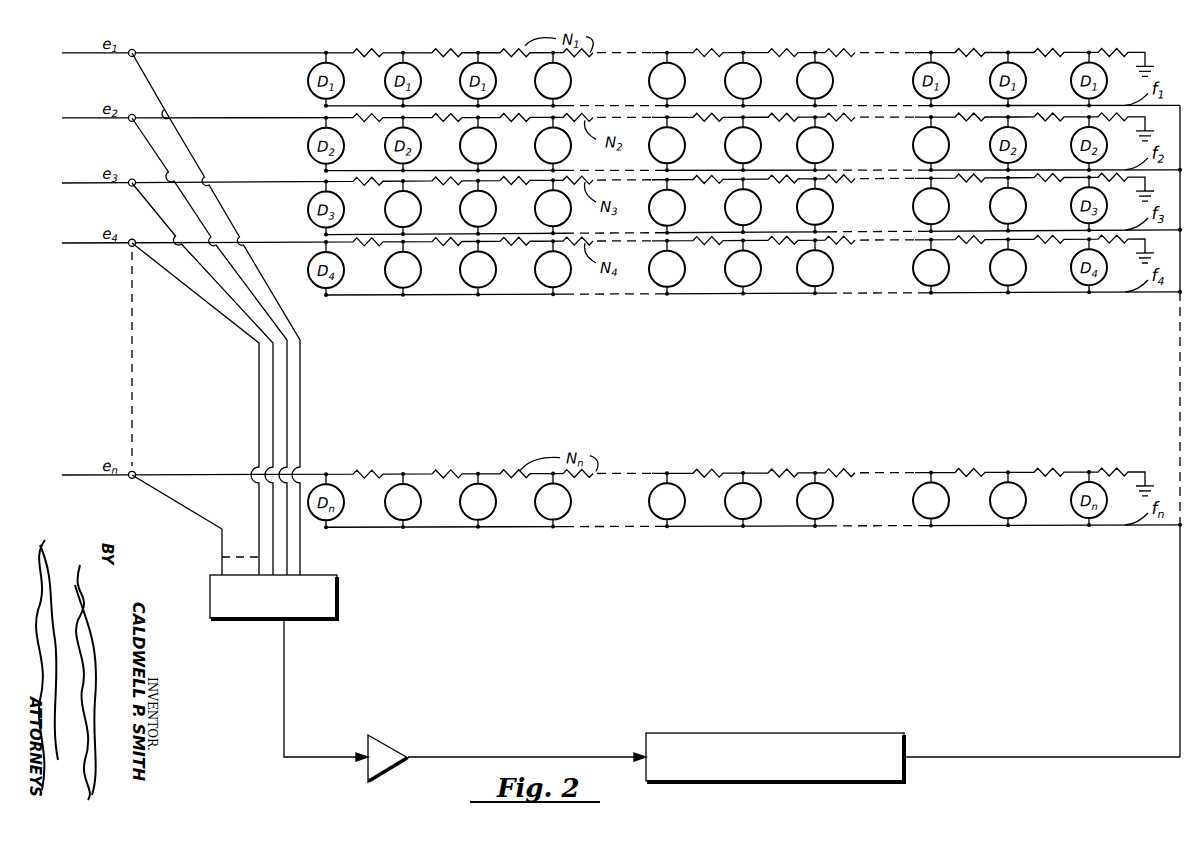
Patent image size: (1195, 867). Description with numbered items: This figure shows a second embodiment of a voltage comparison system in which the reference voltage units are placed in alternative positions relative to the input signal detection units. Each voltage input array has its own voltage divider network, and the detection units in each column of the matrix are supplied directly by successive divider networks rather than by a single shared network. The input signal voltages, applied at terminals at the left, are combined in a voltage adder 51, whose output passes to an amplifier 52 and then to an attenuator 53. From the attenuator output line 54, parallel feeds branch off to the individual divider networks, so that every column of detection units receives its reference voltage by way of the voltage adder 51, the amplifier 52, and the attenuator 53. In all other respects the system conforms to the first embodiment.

The voltage adder 51 is at (337, 602).
The amplifier 52 is at (383, 740).
The attenuator 53 is at (695, 733).
The attenuator output line 54 is at (985, 757).